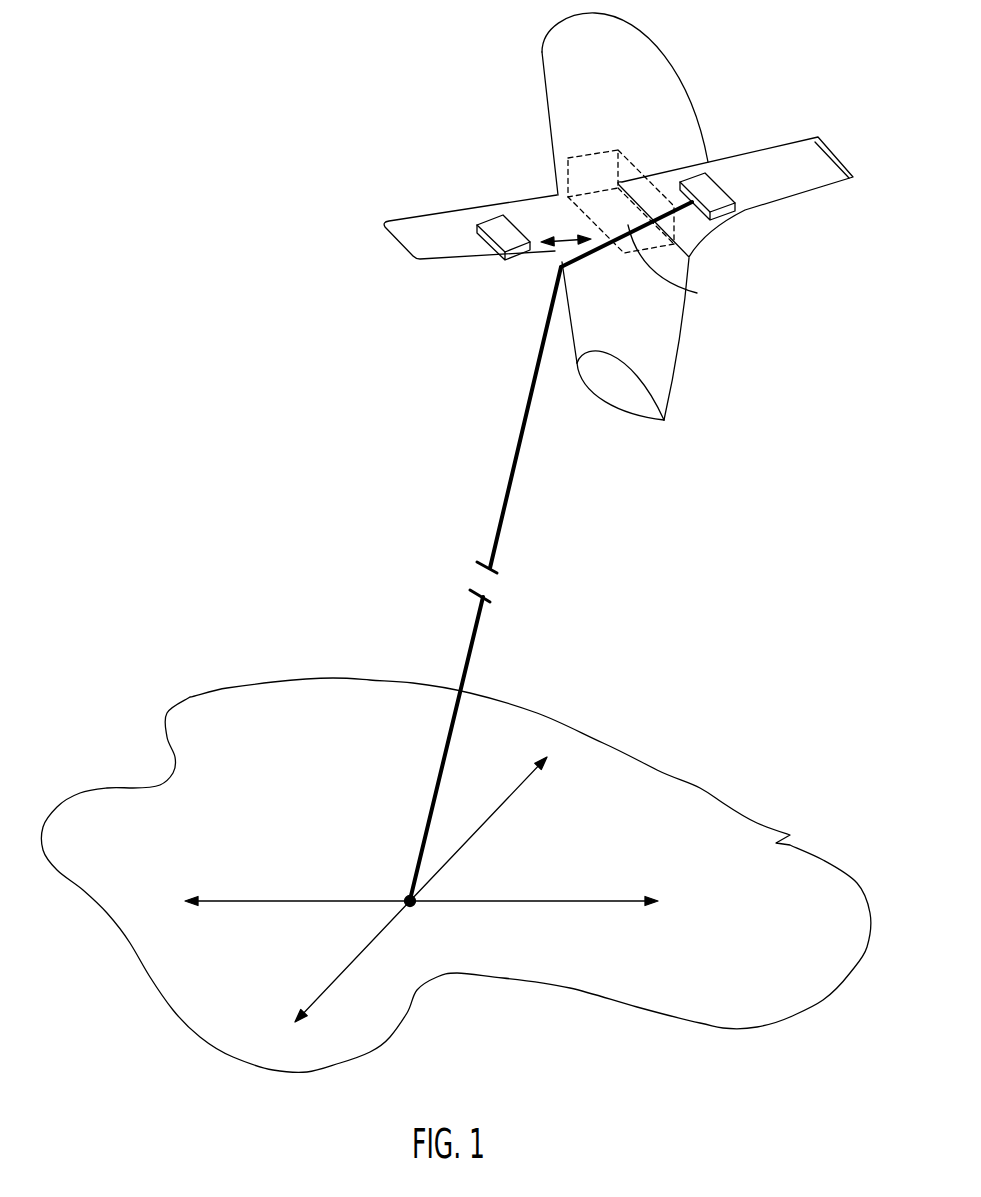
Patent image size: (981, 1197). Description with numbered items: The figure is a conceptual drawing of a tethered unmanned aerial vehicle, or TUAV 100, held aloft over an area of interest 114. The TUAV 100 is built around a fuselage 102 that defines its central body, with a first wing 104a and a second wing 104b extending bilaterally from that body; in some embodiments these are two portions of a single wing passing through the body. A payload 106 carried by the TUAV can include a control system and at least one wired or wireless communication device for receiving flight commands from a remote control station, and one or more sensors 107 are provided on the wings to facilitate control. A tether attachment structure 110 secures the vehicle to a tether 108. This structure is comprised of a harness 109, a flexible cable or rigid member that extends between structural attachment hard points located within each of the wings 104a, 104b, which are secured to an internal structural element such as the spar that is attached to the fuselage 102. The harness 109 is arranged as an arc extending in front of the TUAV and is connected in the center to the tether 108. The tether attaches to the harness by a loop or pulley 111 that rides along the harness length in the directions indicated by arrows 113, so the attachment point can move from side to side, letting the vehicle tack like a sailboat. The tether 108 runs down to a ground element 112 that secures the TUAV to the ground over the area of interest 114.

The tethered unmanned aerial vehicle 100 is at (390, 104).
The fuselage 102 is at (567, 83).
The first wing 104a is at (415, 259).
The second wing 104b is at (790, 192).
The payload 106 is at (588, 170).
The sensors 107 is at (503, 216).
The tether 108 is at (496, 528).
The harness 109 is at (545, 258).
The tether attachment structure 110 is at (495, 321).
The loop or pulley 111 is at (564, 272).
The ground element 112 is at (386, 891).
The arrows 113 is at (566, 227).
The area of interest 114 is at (705, 793).